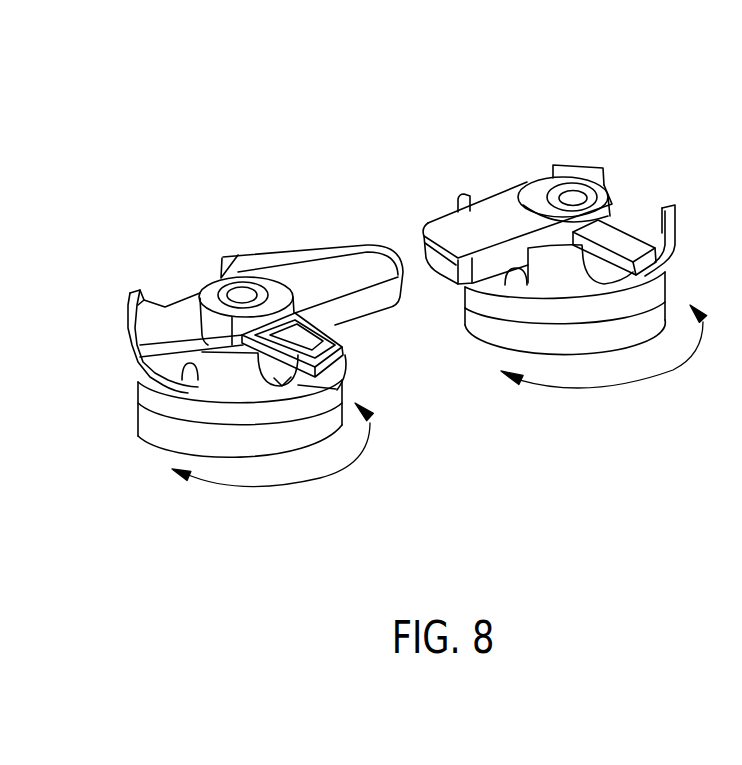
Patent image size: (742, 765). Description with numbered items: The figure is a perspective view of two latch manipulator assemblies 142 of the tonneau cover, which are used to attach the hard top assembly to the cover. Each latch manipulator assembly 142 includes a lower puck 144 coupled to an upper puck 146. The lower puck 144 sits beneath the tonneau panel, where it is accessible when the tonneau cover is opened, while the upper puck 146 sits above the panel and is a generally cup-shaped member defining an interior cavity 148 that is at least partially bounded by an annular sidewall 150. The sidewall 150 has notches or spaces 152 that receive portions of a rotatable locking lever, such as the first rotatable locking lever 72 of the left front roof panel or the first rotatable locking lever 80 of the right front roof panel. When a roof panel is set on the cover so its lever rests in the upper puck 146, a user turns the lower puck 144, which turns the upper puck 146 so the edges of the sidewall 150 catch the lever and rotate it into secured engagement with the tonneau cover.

The first rotatable locking lever 72 is at (312, 262).
The first rotatable locking lever 80 is at (519, 196).
The latch manipulator assembly 142 is at (234, 147).
The lower puck 144 is at (157, 425).
The upper puck 146 is at (132, 340).
The interior cavity 148 is at (183, 320).
The annular sidewall 150 is at (140, 357).
The notches or spaces 152 is at (193, 378).